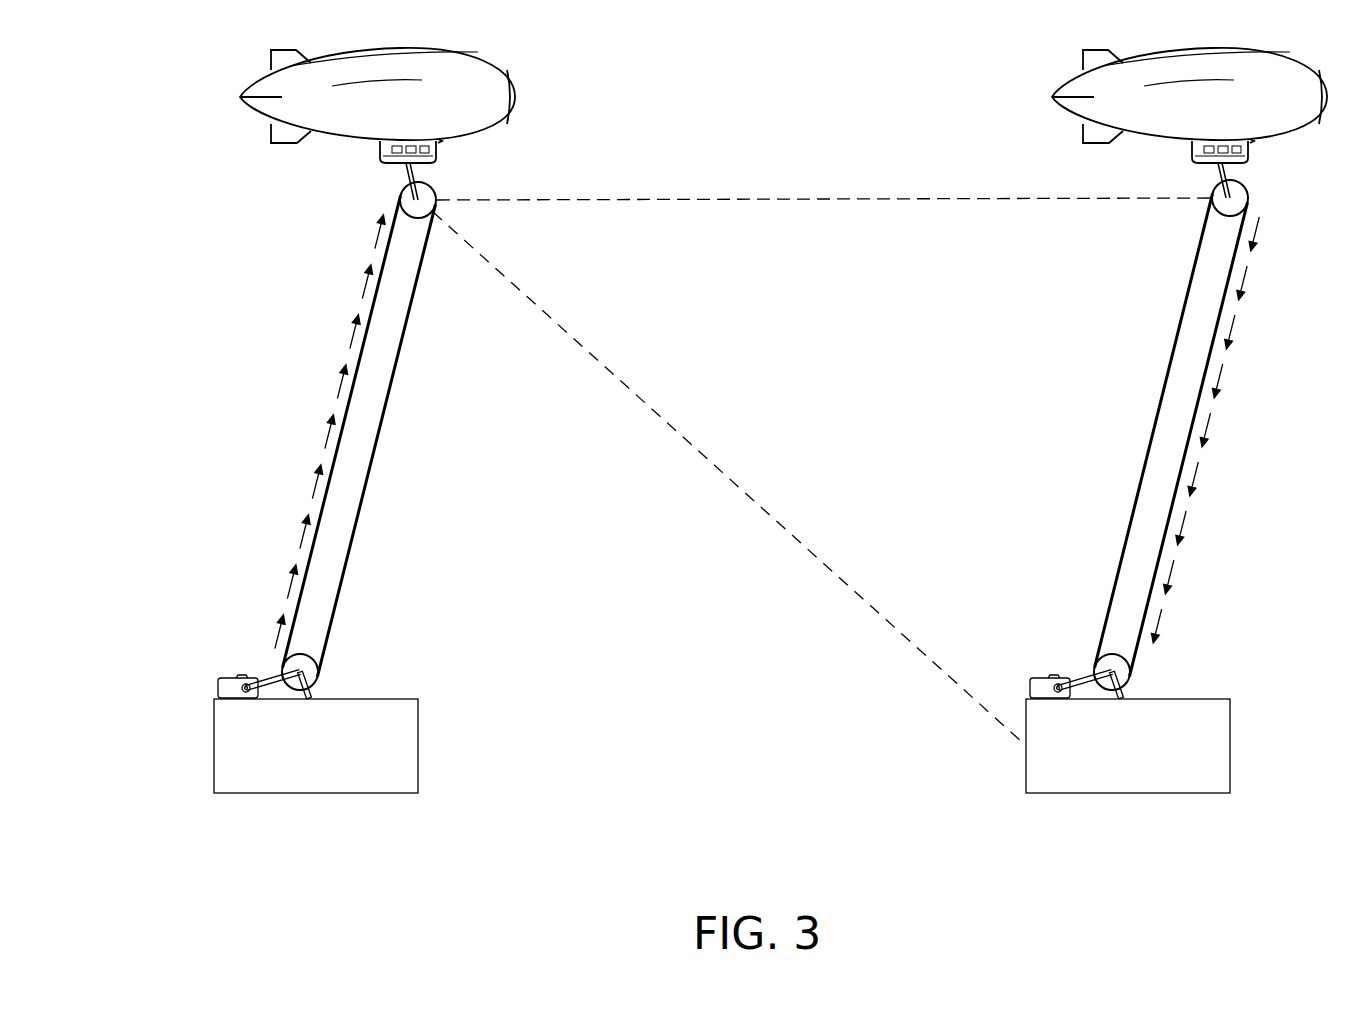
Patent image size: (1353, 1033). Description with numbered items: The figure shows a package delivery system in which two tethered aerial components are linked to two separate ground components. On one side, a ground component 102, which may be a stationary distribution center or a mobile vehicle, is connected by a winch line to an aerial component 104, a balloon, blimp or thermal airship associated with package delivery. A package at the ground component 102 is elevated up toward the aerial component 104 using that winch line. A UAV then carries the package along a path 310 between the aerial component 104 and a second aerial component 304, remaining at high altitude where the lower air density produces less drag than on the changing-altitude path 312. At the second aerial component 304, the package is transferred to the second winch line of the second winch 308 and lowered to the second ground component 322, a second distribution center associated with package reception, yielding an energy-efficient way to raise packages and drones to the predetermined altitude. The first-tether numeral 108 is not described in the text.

The second aerial component 304 is at (392, 52).
The aerial component 104 is at (1204, 52).
The second winch 308 is at (352, 376).
The first tether 108 is at (1168, 376).
The path 310 is at (758, 198).
The path 312 is at (748, 488).
The second ground component 322 is at (229, 688).
The ground component 102 is at (1027, 772).